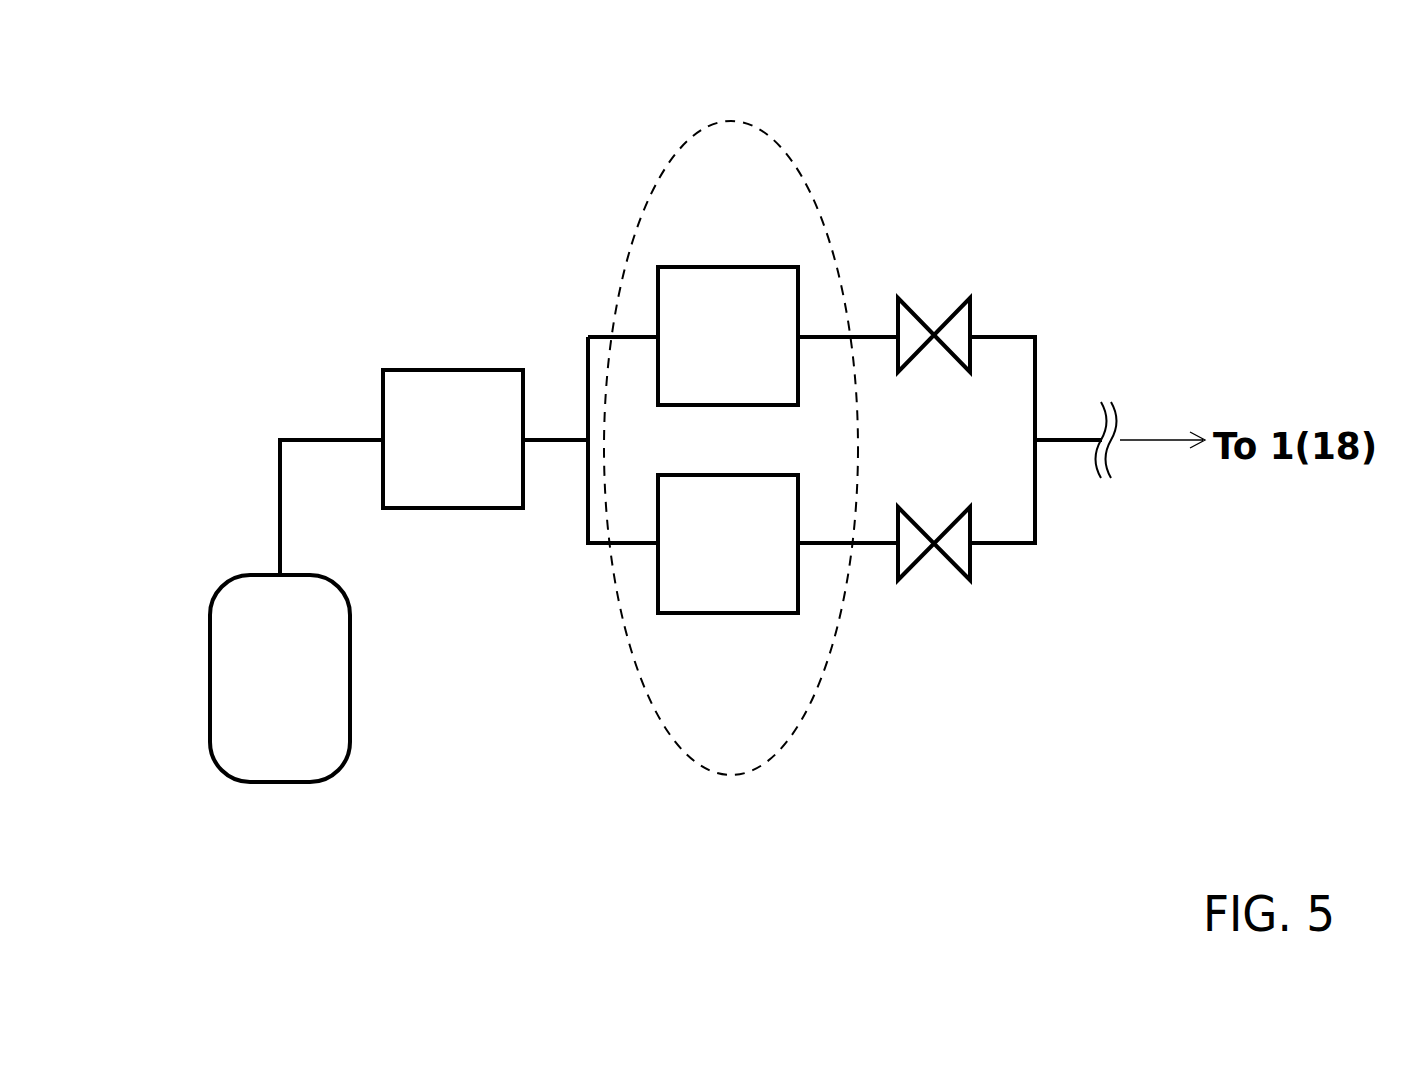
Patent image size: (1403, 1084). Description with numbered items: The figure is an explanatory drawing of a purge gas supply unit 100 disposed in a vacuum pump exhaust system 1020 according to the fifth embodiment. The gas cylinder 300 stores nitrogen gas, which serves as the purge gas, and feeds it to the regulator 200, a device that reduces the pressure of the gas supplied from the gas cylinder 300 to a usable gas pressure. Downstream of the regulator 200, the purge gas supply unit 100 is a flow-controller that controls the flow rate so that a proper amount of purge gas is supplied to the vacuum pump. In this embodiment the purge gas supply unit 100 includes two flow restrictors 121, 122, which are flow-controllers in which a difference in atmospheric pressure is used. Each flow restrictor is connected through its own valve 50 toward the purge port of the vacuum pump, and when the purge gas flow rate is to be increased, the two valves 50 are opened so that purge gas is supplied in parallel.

The vacuum pump exhaust system 1020 is at (1040, 140).
The purge gas supply unit 100 is at (808, 712).
The flow restrictor 121 is at (728, 258).
The flow restrictor 122 is at (728, 627).
The valve 50 is at (933, 300).
The regulator 200 is at (440, 360).
The gas cylinder 300 is at (215, 580).